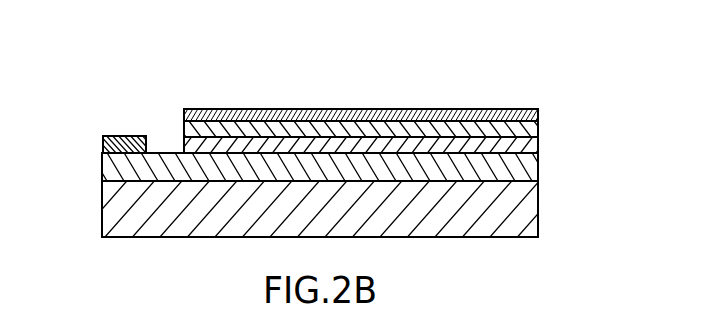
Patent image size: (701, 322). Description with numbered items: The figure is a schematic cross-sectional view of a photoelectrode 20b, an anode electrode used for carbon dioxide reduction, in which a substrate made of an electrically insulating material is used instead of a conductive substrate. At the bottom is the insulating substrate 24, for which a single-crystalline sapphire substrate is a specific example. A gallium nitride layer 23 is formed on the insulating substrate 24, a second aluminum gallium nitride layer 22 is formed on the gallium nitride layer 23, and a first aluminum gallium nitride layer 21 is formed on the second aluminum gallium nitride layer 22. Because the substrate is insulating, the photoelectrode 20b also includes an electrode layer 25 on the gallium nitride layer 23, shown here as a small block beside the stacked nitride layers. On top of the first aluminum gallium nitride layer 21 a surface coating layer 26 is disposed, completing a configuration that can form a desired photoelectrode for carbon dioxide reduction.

The photoelectrode 20b is at (452, 80).
The first aluminum gallium nitride layer 21 is at (537, 124).
The second aluminum gallium nitride layer 22 is at (537, 146).
The gallium nitride layer 23 is at (528, 167).
The insulating substrate 24 is at (528, 213).
The electrode layer 25 is at (115, 143).
The surface coating layer 26 is at (531, 109).